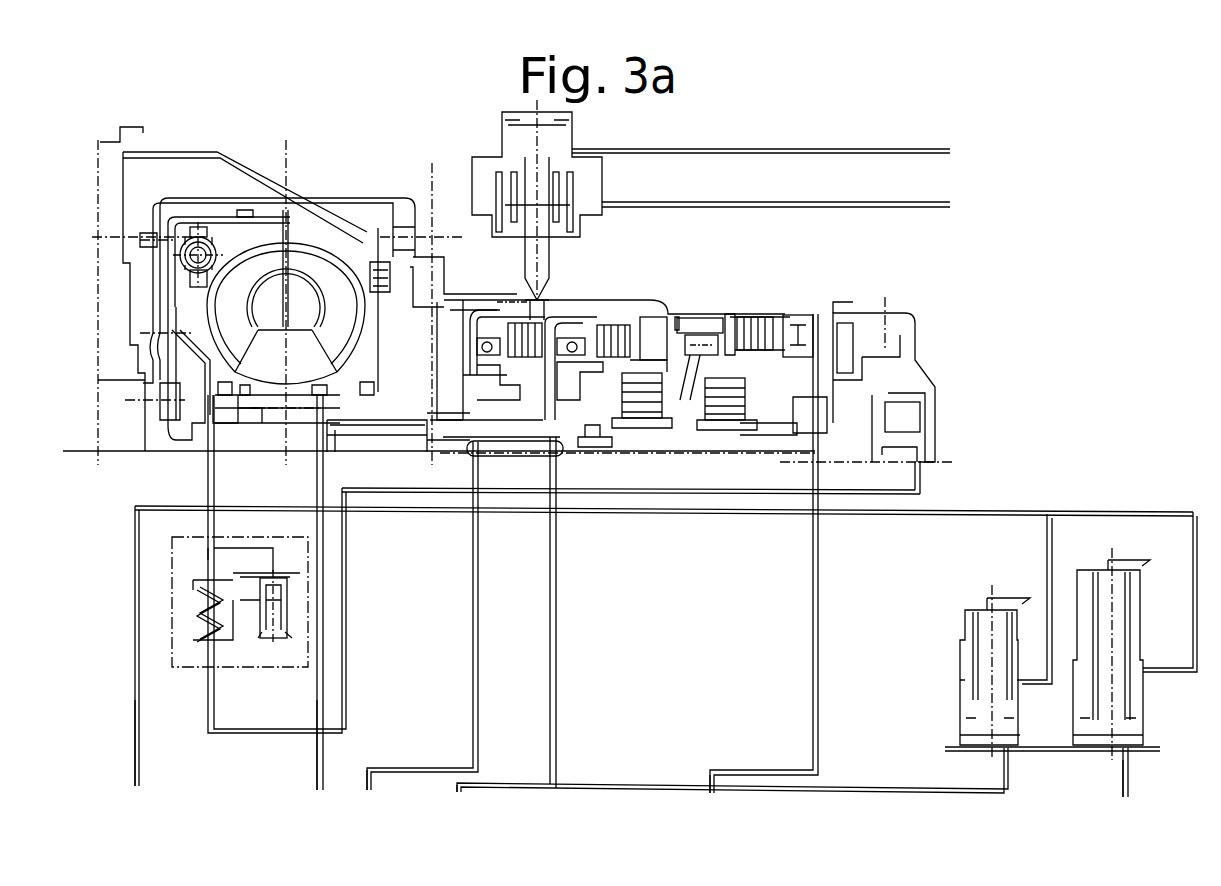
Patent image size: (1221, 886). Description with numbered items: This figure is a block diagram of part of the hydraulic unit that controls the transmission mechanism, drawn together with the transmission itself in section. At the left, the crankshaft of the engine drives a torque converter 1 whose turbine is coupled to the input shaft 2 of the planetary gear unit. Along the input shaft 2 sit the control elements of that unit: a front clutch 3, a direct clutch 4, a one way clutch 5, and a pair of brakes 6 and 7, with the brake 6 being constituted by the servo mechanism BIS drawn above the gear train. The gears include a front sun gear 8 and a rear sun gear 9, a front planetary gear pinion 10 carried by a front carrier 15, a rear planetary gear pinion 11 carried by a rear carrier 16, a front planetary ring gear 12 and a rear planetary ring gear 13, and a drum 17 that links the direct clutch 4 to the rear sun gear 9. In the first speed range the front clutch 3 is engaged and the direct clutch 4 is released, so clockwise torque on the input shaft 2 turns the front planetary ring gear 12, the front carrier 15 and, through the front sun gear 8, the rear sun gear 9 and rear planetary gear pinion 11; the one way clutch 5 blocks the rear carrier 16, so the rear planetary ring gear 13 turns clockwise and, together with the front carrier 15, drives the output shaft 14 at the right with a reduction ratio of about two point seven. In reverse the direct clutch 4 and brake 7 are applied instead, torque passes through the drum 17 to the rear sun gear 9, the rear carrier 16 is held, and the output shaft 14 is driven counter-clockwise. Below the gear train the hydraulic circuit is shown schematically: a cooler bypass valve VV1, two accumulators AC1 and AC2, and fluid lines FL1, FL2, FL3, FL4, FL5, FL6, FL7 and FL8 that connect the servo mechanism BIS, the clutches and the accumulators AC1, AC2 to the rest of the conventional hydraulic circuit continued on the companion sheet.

The torque converter 1 is at (308, 262).
The input shaft 2 is at (363, 448).
The front clutch 3 is at (617, 327).
The direct clutch 4 is at (508, 322).
The one way clutch 5 is at (708, 318).
The brake 6 is at (544, 301).
The brake 7 is at (755, 316).
The front sun gear 8 is at (637, 440).
The rear sun gear 9 is at (716, 440).
The front planetary gear pinion 10 is at (660, 408).
The rear planetary gear pinion 11 is at (742, 436).
The front planetary ring gear 12 is at (648, 325).
The rear planetary ring gear 13 is at (793, 325).
The output shaft 14 is at (872, 435).
The front carrier 15 is at (596, 448).
The rear carrier 16 is at (728, 318).
The drum 17 is at (573, 312).
The servo mechanism BIS is at (593, 162).
The fluid line FL1 is at (137, 758).
The fluid line FL2 is at (317, 759).
The fluid line FL3 is at (377, 794).
The fluid line FL4 is at (461, 802).
The fluid line FL5 is at (713, 798).
The fluid line FL6 is at (1125, 793).
The fluid line FL7 is at (783, 152).
The fluid line FL8 is at (798, 207).
The accumulator AC1 is at (960, 660).
The accumulator AC2 is at (1147, 606).
The cooler bypass valve VV1 is at (176, 670).